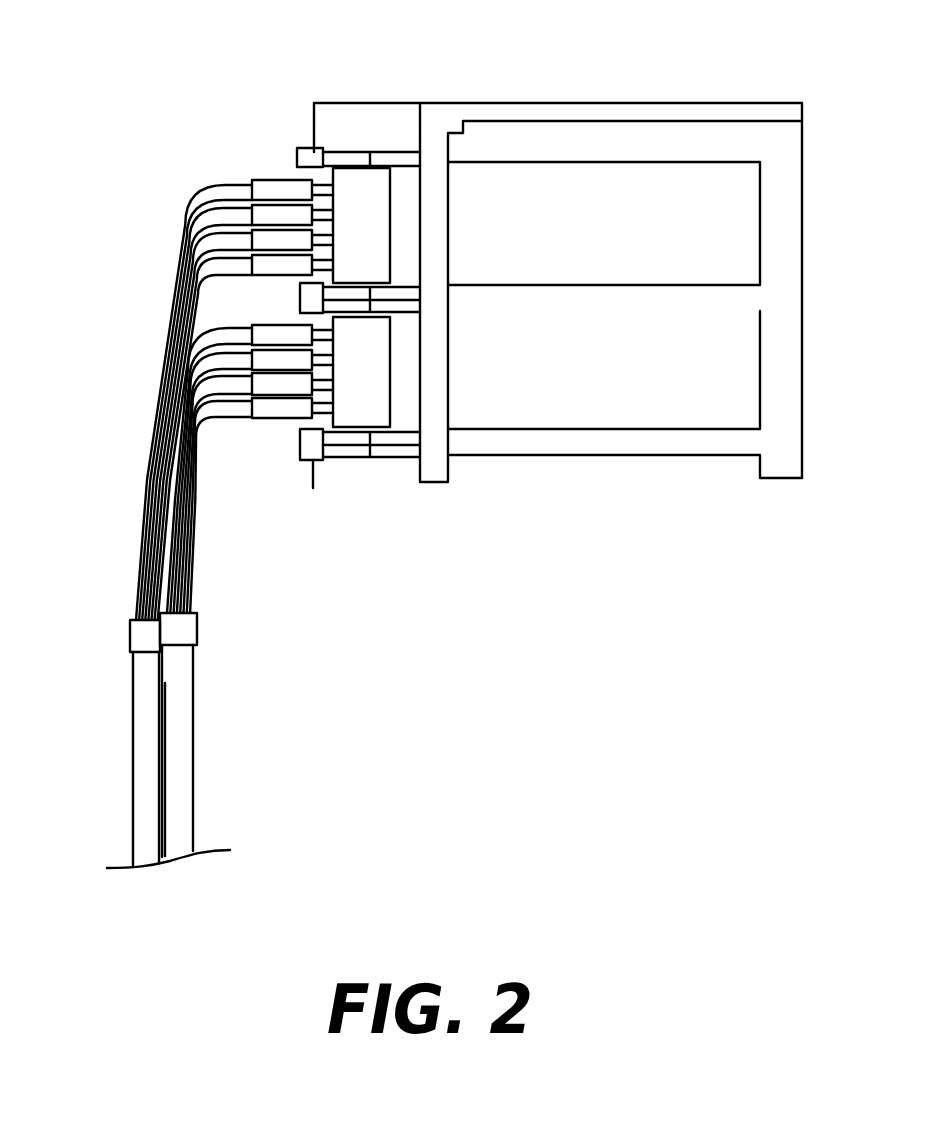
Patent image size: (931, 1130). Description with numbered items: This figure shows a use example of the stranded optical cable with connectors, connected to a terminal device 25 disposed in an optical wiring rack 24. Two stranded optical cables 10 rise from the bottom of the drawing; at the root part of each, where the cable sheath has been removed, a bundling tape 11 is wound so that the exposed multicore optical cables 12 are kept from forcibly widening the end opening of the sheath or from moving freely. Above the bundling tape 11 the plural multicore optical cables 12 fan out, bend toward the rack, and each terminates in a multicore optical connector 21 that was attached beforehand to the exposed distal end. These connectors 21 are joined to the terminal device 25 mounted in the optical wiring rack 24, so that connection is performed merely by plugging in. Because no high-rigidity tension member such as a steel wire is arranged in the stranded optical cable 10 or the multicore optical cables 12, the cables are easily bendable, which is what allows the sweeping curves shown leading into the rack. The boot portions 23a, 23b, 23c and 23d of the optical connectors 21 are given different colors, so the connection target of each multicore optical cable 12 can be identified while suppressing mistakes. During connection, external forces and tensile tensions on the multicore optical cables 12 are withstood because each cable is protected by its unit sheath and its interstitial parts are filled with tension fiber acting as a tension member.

The stranded optical cable 10 is at (138, 785).
The bundling tape 11 is at (132, 643).
The multicore optical cable 12 is at (142, 548).
The multicore optical connector 21 is at (272, 180).
The boot portion 23a is at (172, 285).
The boot portion 23b is at (217, 243).
The boot portion 23c is at (218, 218).
The boot portion 23d is at (237, 192).
The optical wiring rack 24 is at (580, 102).
The terminal device 25 is at (378, 213).